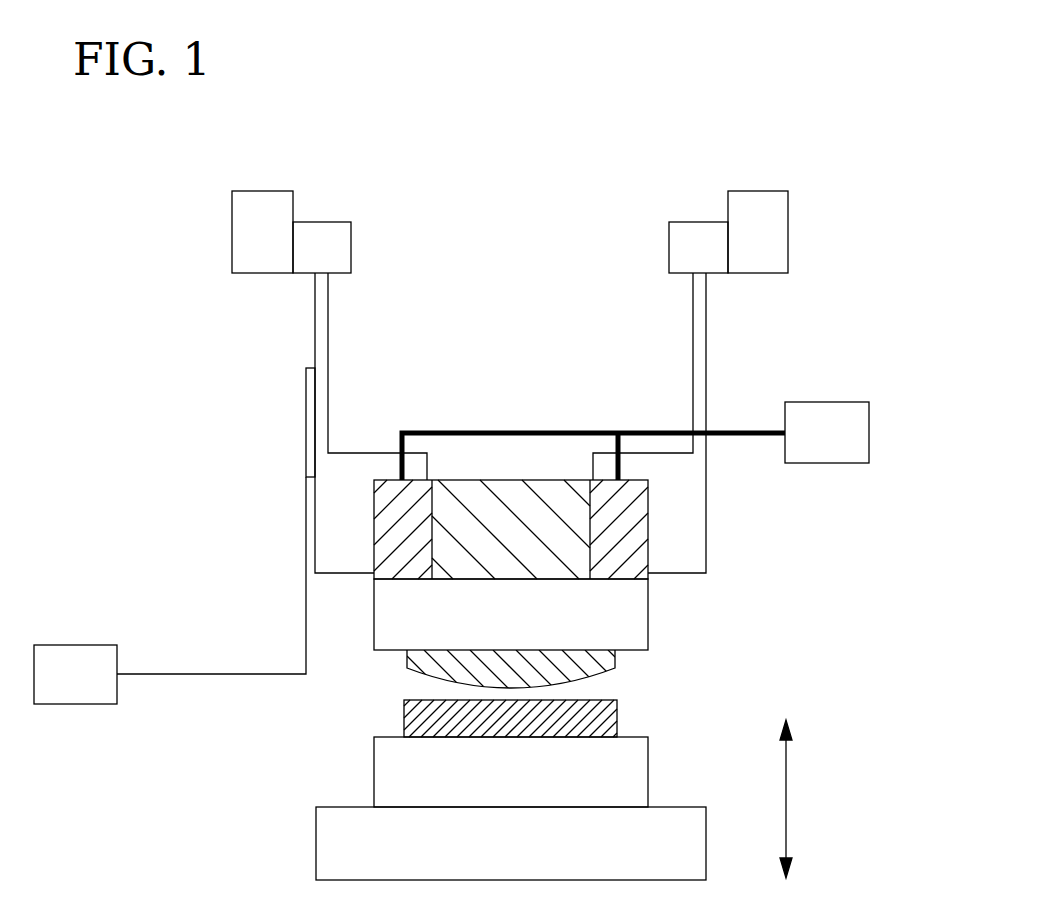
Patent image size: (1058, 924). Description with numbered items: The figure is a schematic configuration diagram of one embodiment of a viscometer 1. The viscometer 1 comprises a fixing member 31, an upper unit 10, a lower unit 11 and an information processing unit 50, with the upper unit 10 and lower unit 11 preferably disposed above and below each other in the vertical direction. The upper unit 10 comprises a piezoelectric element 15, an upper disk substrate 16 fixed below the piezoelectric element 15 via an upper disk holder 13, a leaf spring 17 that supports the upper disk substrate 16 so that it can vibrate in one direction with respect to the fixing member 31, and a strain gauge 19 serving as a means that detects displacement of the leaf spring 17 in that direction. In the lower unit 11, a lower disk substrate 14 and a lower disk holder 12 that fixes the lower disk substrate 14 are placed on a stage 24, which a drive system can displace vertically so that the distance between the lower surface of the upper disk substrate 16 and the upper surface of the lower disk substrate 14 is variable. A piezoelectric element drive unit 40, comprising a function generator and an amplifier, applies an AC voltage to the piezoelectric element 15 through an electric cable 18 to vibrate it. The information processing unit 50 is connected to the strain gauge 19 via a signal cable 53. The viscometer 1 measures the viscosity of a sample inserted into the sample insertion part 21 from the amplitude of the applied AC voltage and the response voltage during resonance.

The viscometer 1 is at (862, 130).
The upper unit 10 is at (172, 305).
The lower unit 11 is at (247, 692).
The lower disk holder 12 is at (397, 772).
The upper disk holder 13 is at (402, 613).
The lower disk substrate 14 is at (403, 712).
The piezoelectric element 15 is at (398, 525).
The upper disk substrate 16 is at (408, 672).
The leaf spring 17 is at (322, 302).
The electric cable 18 is at (745, 436).
The strain gauge 19 is at (310, 420).
The sample insertion part 21 is at (512, 695).
The stage 24 is at (338, 843).
The fixing member 31 is at (260, 191).
The piezoelectric element drive unit 40 is at (828, 463).
The information processing unit 50 is at (78, 704).
The signal cable 53 is at (148, 674).